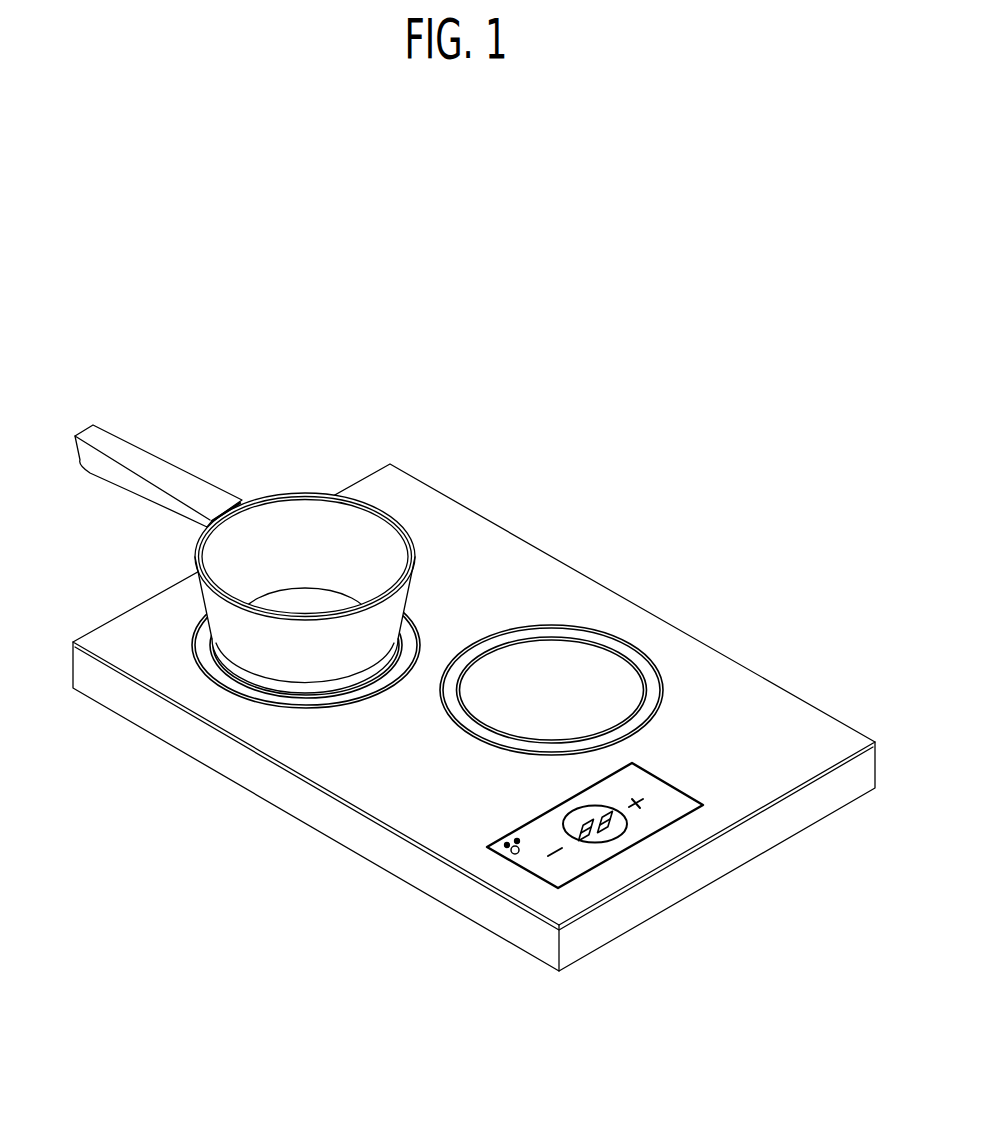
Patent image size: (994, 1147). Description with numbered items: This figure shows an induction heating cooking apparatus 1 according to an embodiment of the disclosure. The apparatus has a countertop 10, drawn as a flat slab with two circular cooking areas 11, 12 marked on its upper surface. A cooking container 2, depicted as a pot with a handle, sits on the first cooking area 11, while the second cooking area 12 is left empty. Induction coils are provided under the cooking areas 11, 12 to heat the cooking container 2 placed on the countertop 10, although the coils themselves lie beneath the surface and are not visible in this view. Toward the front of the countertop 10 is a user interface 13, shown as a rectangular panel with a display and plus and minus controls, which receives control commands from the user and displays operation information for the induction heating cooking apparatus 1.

The induction heating cooking apparatus 1 is at (655, 470).
The cooking container 2 is at (282, 492).
The countertop 10 is at (795, 715).
The cooking area 11 is at (410, 617).
The cooking area 12 is at (632, 647).
The user interface 13 is at (627, 847).